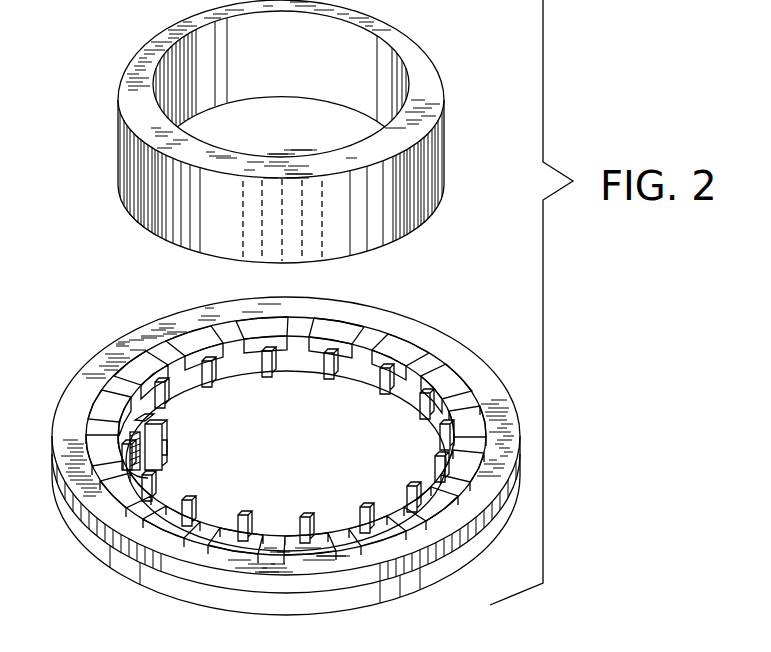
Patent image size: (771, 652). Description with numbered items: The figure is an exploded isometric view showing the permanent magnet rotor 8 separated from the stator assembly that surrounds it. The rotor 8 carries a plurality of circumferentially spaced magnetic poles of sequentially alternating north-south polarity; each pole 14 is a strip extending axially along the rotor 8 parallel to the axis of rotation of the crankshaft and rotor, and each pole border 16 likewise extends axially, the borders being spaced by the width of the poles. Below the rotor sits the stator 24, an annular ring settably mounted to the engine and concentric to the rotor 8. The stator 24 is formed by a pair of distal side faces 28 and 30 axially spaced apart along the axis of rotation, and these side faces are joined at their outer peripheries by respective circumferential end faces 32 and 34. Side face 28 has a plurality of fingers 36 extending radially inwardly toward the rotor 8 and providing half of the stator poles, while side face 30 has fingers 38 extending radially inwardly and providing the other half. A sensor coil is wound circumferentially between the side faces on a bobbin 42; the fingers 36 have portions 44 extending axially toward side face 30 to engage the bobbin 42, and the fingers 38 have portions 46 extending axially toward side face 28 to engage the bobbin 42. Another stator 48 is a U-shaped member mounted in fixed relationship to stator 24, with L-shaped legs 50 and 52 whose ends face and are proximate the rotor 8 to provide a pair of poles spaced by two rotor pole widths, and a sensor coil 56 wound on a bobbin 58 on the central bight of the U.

The rotor 8 is at (444, 118).
The pole 14 is at (325, 256).
The pole border 16 is at (300, 255).
The stator 24 is at (266, 460).
The side face 28 is at (88, 362).
The side face 30 is at (68, 534).
The circumferential end face 32 is at (120, 548).
The circumferential end face 34 is at (158, 580).
The fingers 36 is at (382, 308).
The fingers 38 is at (392, 400).
The bobbin 42 is at (382, 357).
The portions 44 is at (380, 320).
The portions 46 is at (425, 386).
The stator 48 is at (172, 432).
The leg 50 is at (165, 450).
The leg 52 is at (128, 474).
The sensor coil 56 is at (146, 414).
The bobbin 58 is at (138, 466).